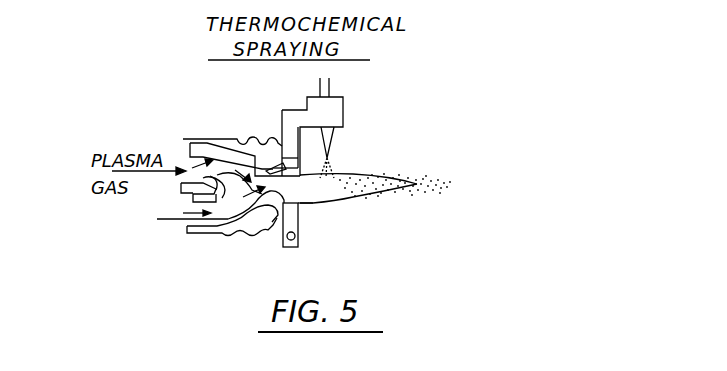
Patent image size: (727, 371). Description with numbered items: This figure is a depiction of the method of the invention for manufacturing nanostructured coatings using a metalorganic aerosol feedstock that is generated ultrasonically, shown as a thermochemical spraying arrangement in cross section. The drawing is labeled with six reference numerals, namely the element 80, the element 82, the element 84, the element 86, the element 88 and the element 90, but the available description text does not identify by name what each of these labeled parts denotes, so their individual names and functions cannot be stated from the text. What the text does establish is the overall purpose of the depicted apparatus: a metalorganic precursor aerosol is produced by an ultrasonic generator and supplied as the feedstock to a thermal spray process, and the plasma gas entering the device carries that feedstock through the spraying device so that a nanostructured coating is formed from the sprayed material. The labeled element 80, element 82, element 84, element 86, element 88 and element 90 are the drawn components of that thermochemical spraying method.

The powder feeder 80 is at (337, 95).
The powder injection nozzle 82 is at (333, 138).
The injected powder 84 is at (330, 157).
The plasma flame 86 is at (360, 177).
The plasma spray gun 88 is at (222, 200).
The sprayed particles 90 is at (443, 182).